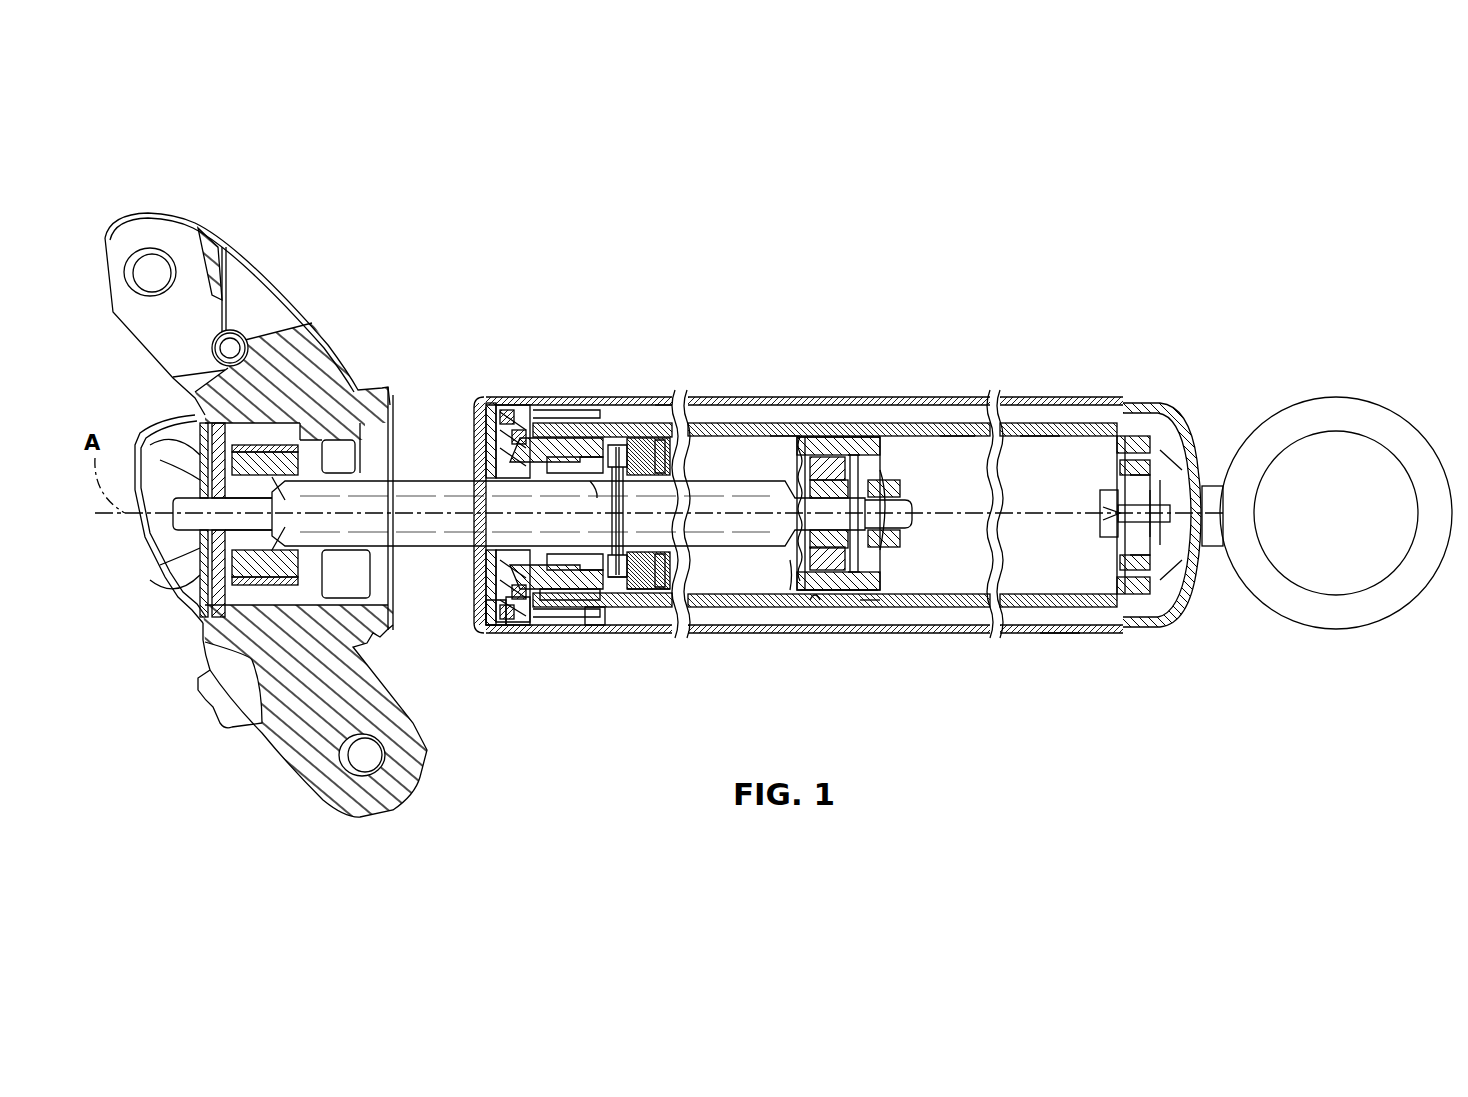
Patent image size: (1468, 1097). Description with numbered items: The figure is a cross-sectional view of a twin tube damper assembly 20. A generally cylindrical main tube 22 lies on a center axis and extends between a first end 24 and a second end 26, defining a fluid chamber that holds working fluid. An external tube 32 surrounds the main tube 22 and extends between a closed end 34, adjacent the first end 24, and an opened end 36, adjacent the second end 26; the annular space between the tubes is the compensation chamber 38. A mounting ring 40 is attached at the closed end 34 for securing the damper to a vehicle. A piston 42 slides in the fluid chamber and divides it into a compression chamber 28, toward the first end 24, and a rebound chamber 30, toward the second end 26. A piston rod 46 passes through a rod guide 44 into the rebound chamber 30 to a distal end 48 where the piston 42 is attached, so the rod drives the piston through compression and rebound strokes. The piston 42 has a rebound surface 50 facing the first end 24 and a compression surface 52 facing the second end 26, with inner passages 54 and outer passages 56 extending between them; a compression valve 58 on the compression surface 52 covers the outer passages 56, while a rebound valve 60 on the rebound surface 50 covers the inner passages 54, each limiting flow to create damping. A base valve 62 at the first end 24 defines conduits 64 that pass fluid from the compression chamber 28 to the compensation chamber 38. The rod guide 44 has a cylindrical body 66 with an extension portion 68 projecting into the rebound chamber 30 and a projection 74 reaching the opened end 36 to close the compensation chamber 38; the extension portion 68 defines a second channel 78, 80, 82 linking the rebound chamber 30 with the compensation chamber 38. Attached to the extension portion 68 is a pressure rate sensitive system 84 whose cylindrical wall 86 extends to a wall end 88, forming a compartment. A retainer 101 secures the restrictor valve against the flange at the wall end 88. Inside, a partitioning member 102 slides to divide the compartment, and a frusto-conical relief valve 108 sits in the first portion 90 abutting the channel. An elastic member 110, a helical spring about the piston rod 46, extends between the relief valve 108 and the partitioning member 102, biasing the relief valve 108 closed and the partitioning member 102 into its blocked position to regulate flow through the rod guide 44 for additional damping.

The twin tube damper assembly 20 is at (690, 318).
The main tube 22 is at (812, 418).
The first end 24 is at (1123, 415).
The second end 26 is at (523, 420).
The compression chamber 28 is at (1032, 418).
The rebound chamber 30 is at (722, 418).
The external tube 32 is at (1062, 634).
The closed end 34 is at (1160, 402).
The opened end 36 is at (490, 402).
The compensation chamber 38 is at (885, 405).
The mounting ring 40 is at (1290, 412).
The piston 42 is at (868, 628).
The rod guide 44 is at (565, 603).
The piston rod 46 is at (412, 481).
The distal end 48 is at (955, 418).
The rebound surface 50 is at (880, 570).
The compression surface 52 is at (790, 560).
The inner passages 54 is at (843, 418).
The outer passages 56 is at (818, 602).
The compression valve 58 is at (785, 418).
The rebound valve 60 is at (872, 470).
The base valve 62 is at (1133, 628).
The conduits 64 is at (1150, 622).
The body 66 is at (530, 627).
The extension portion 68 is at (590, 627).
The projection 74 is at (510, 627).
The second channel 78 is at (565, 418).
The second channel 80 is at (476, 408).
The second channel 82 is at (507, 408).
The pressure rate sensitive system 84 is at (648, 625).
The wall 86 is at (612, 420).
The wall end 88 is at (670, 405).
The first portion 90 is at (618, 610).
The retainer 101 is at (660, 622).
The partitioning member 102 is at (638, 420).
The relief valve 108 is at (597, 495).
The elastic member 110 is at (628, 500).